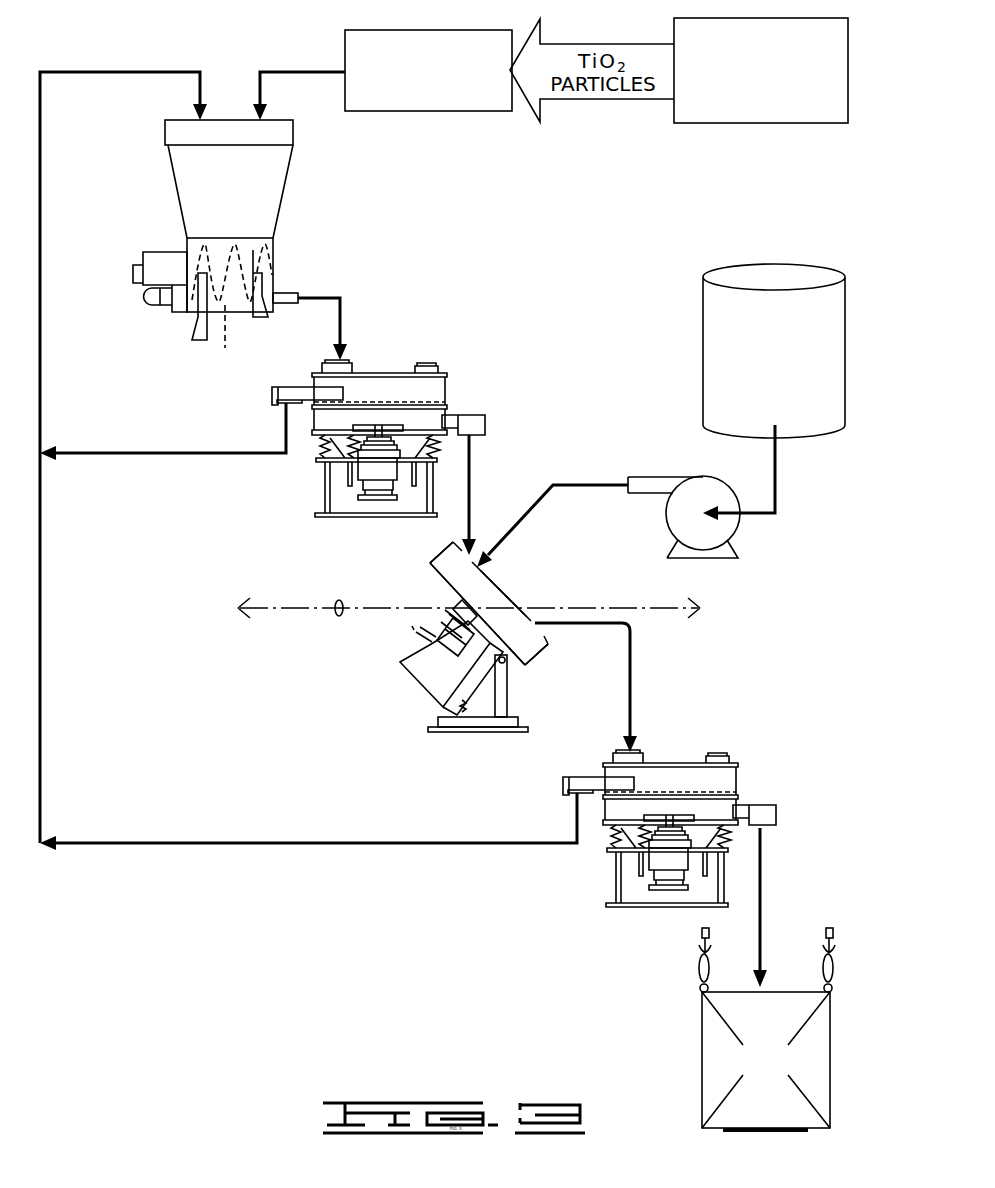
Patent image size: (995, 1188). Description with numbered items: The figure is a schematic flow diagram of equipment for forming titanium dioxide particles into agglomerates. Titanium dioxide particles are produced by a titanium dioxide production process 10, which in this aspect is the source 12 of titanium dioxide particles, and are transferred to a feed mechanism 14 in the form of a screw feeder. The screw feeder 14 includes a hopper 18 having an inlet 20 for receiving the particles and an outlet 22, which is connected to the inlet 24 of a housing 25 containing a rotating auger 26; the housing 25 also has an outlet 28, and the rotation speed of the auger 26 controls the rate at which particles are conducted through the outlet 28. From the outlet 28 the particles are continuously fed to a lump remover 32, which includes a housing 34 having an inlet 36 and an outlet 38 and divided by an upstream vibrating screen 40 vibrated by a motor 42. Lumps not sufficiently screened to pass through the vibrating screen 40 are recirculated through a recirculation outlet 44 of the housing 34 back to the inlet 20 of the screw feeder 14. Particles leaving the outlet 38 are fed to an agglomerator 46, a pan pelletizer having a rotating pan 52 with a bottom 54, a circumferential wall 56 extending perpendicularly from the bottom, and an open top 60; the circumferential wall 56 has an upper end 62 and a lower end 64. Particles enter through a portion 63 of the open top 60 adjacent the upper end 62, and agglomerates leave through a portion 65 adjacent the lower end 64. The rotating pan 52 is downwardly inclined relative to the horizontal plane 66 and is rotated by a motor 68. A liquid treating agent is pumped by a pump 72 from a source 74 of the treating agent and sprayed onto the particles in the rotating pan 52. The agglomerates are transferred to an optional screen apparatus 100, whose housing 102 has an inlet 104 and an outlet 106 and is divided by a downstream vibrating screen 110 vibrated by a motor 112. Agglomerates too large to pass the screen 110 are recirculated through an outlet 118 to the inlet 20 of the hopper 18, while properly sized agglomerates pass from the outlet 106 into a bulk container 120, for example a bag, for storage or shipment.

The titanium dioxide production process 10 is at (762, 94).
The source of titanium dioxide particles 12 is at (428, 94).
The feed mechanism 14 is at (240, 234).
The hopper 18 is at (196, 191).
The inlet 20 is at (195, 115).
The outlet 22 is at (202, 255).
The inlet 24 is at (269, 265).
The housing 25 is at (250, 282).
The rotating auger 26 is at (224, 343).
The outlet 28 is at (295, 321).
The lump remover 32 is at (426, 431).
The housing 34 is at (379, 368).
The inlet 36 is at (362, 341).
The outlet 38 is at (502, 416).
The upstream vibrating screen 40 is at (432, 365).
The motor 42 is at (333, 466).
The recirculation outlet 44 is at (270, 403).
The agglomerator 46 is at (469, 629).
The rotating pan 52 is at (466, 603).
The bottom 54 is at (456, 614).
The circumferential wall 56 is at (489, 603).
The open top 60 is at (517, 591).
The upper end 62 is at (401, 544).
The portion of the open top 63 is at (507, 554).
The lower end 64 is at (569, 673).
The portion of the open top 65 is at (564, 642).
The horizontal plane 66 is at (469, 633).
The motor 68 is at (443, 666).
The pump 72 is at (719, 518).
The source of treating agent 74 is at (777, 328).
The screen apparatus 100 is at (720, 824).
The housing 102 is at (670, 760).
The inlet 104 is at (659, 732).
The outlet 106 is at (787, 809).
The downstream vibrating screen 110 is at (733, 756).
The motor 112 is at (620, 857).
The outlet 118 is at (556, 796).
The bulk container 120 is at (716, 1030).